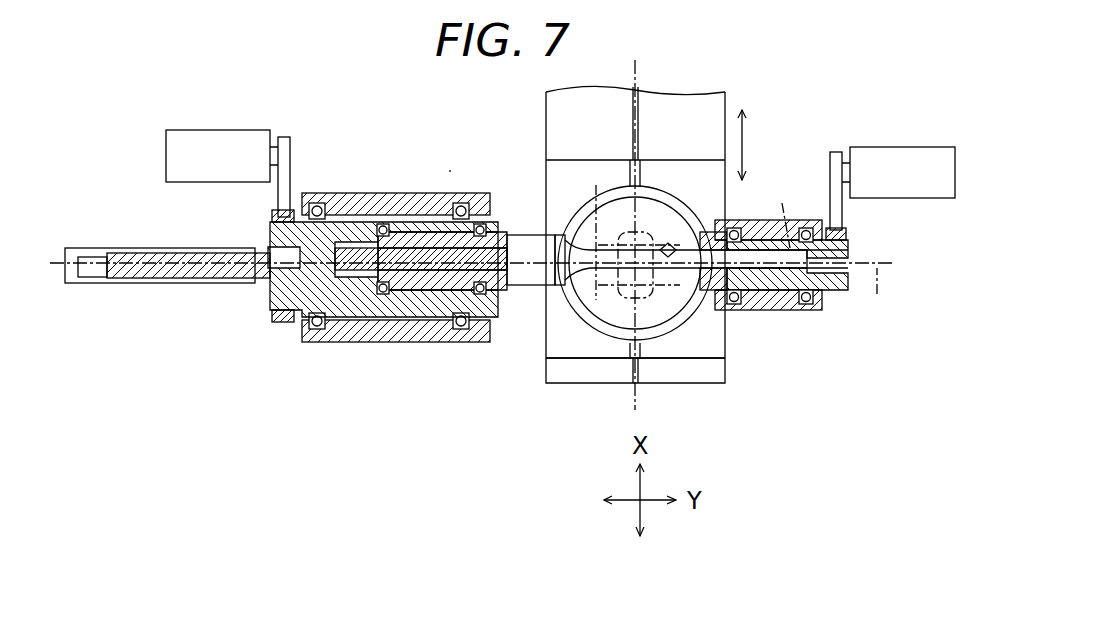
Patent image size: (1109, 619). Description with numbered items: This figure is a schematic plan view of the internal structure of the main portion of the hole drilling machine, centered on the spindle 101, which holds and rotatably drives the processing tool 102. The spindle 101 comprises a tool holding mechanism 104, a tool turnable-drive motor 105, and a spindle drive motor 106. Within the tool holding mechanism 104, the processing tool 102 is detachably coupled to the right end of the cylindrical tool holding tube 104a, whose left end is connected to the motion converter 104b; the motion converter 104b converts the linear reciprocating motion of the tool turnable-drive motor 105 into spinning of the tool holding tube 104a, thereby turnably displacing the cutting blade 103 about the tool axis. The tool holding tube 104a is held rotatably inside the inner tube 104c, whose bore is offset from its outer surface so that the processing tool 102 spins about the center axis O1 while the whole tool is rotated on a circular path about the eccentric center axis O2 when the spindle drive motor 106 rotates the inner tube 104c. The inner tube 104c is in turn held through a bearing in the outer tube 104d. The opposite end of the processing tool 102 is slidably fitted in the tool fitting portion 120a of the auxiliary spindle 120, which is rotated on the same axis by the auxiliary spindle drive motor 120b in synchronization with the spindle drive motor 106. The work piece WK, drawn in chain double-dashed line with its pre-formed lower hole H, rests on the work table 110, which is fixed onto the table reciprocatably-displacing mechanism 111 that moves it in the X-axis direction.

The spindle 101 is at (383, 168).
The processing tool 102 is at (533, 232).
The cutting blade 103 is at (669, 244).
The tool holding mechanism 104 is at (508, 386).
The tool holding tube 104a is at (422, 316).
The motion converter 104b is at (352, 292).
The inner tube 104c is at (381, 288).
The outer tube 104d is at (475, 342).
The tool turnable-drive motor 105 is at (133, 247).
The spindle drive motor 106 is at (166, 155).
The work table 110 is at (657, 333).
The table reciprocatably-displacing mechanism 111 is at (728, 384).
The auxiliary spindle 120 is at (818, 325).
The tool fitting portion 120a is at (701, 232).
The auxiliary spindle drive motor 120b is at (915, 198).
The lower hole H is at (598, 229).
The work piece WK is at (668, 298).
The center axis of spinning O1 is at (786, 211).
The center axis of rotation O2 is at (877, 296).